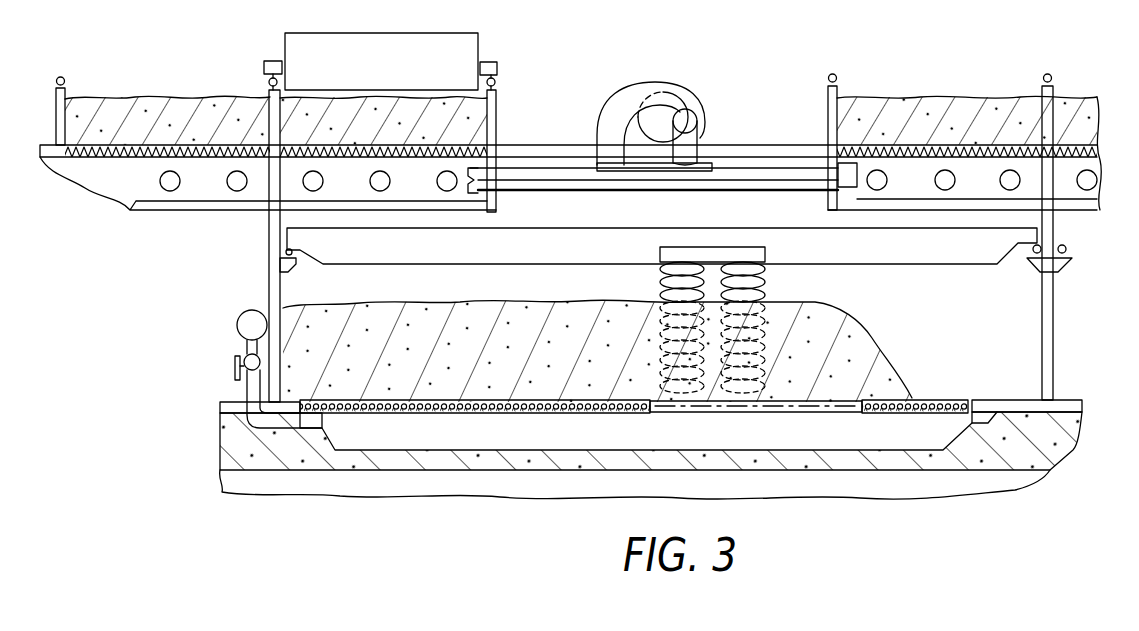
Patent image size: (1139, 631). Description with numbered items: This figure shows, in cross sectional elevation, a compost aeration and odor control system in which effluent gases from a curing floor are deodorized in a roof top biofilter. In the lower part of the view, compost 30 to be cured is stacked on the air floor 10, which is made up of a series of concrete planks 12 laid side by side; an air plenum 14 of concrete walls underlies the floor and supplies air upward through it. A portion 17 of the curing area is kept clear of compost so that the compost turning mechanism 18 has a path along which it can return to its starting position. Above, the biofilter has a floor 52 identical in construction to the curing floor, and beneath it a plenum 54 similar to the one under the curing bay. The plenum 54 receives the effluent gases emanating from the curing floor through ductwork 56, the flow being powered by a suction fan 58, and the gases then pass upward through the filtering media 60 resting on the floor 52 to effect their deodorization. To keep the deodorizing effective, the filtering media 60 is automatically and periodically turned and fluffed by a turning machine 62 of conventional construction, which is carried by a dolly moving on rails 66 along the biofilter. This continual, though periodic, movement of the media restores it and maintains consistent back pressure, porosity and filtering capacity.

The air floor 10 is at (408, 434).
The planks 12 is at (605, 403).
The air plenum 14 is at (882, 435).
The portion of the curing area 17 is at (921, 379).
The compost turning mechanism 18 is at (772, 283).
The compost 30 is at (870, 340).
The floor 52 is at (140, 147).
The plenum 54 is at (203, 195).
The ductwork 56 is at (703, 138).
The suction fan 58 is at (692, 83).
The filtering media 60 is at (173, 97).
The turning machine 62 is at (479, 34).
The rails 66 is at (496, 83).